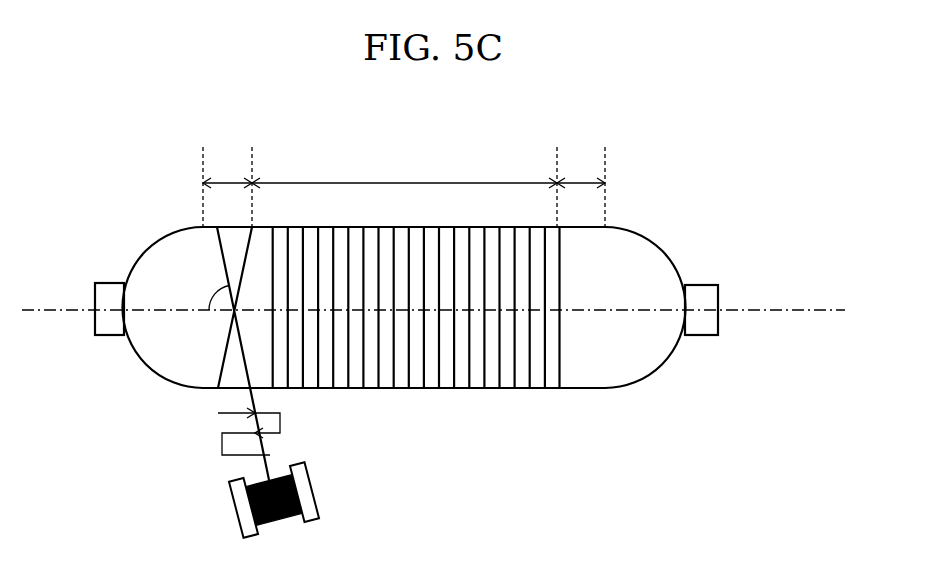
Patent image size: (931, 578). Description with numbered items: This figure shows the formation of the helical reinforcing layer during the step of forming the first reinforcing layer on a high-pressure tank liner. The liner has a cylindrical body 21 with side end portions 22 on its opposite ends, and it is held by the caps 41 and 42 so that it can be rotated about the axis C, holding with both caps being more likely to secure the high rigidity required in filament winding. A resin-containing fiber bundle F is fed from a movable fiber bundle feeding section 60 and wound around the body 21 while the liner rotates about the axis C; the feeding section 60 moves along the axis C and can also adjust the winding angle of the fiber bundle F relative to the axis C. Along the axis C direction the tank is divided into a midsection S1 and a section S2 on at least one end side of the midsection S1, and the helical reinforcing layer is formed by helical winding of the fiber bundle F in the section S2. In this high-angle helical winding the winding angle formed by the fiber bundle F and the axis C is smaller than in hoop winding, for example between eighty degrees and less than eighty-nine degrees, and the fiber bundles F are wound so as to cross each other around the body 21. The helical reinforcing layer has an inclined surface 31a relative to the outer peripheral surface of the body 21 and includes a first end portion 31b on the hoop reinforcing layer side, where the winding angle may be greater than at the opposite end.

The body 21 is at (430, 378).
The side end portion 22 is at (652, 256).
The inclined surface 31a is at (532, 382).
The first end portion 31b is at (217, 387).
The cap 41 is at (113, 326).
The cap 42 is at (698, 327).
The fiber bundle feeding section 60 is at (308, 488).
The axis C is at (843, 310).
The fiber bundle F is at (263, 440).
The midsection S1 is at (402, 160).
The section S2 is at (404, 187).